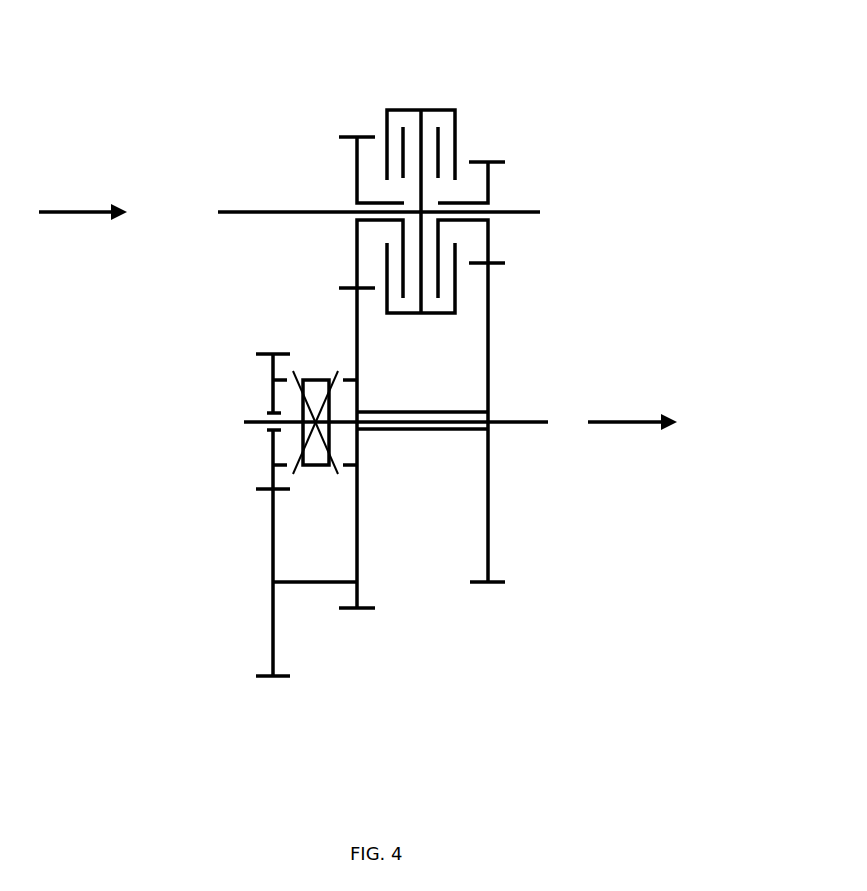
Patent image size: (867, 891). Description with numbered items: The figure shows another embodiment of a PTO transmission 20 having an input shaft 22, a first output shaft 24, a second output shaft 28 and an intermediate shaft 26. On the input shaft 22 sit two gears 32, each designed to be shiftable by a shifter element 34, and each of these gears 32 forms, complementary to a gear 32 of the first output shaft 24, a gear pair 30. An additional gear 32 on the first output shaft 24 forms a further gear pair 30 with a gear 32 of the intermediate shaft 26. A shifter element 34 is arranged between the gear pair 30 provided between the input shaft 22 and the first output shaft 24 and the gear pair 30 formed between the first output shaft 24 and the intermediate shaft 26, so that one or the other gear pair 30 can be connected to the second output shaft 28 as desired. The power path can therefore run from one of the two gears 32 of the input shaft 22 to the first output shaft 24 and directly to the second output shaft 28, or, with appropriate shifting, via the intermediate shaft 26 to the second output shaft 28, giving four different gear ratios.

The PTO transmission 20 is at (690, 120).
The input shaft 22 is at (513, 211).
The first output shaft 24 is at (253, 427).
The intermediate shaft 26 is at (290, 585).
The second output shaft 28 is at (515, 421).
The gear pair 30 is at (359, 132).
The gear 32 is at (490, 553).
The shifter element 34 is at (413, 110).